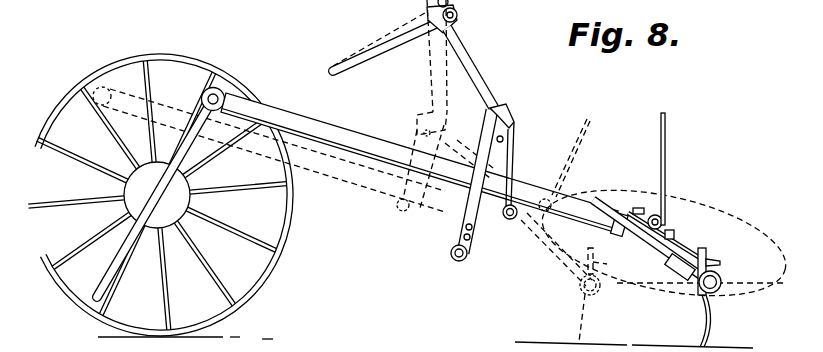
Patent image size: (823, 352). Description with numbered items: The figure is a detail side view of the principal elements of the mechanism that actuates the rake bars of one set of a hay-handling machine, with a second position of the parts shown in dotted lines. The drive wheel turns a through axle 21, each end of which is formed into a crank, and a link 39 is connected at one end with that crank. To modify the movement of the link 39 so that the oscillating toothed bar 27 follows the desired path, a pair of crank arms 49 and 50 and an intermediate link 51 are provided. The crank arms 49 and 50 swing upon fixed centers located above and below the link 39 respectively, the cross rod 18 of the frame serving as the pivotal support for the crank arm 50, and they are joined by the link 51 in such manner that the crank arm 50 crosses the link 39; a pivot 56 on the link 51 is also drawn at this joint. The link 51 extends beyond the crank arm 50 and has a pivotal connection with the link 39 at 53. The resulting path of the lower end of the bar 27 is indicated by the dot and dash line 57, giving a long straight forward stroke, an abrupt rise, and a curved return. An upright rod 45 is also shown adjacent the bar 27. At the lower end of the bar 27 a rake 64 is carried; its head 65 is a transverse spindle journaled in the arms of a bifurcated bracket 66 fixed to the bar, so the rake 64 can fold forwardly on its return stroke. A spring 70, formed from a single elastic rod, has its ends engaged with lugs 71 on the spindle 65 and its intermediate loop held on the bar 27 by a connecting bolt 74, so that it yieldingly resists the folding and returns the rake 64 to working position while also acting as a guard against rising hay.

The cross rod 18 is at (454, 259).
The through axle 21 is at (224, 93).
The oscillating toothed bar 27 is at (607, 197).
The link 39 is at (325, 131).
The rod 45 is at (667, 170).
The crank arm 49 is at (374, 57).
The crank arm 50 is at (469, 204).
The intermediate link 51 is at (484, 77).
The pivotal connection 53 is at (510, 220).
The pivot hole 56 is at (504, 140).
The dot and dash line 57 is at (753, 228).
The rake 64 is at (710, 322).
The head 65 is at (719, 288).
The bifurcated bracket 66 is at (676, 272).
The spring 70 is at (683, 250).
The lugs 71 is at (708, 250).
The connecting bolt 74 is at (668, 231).